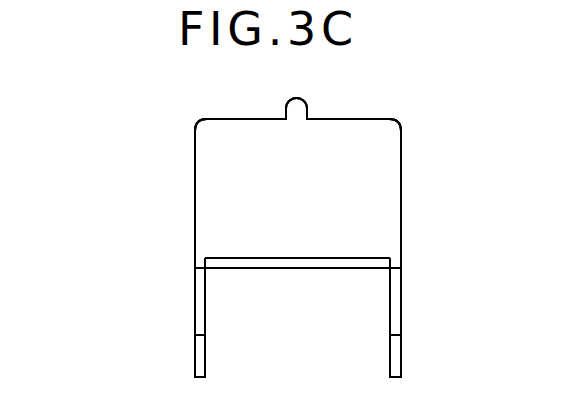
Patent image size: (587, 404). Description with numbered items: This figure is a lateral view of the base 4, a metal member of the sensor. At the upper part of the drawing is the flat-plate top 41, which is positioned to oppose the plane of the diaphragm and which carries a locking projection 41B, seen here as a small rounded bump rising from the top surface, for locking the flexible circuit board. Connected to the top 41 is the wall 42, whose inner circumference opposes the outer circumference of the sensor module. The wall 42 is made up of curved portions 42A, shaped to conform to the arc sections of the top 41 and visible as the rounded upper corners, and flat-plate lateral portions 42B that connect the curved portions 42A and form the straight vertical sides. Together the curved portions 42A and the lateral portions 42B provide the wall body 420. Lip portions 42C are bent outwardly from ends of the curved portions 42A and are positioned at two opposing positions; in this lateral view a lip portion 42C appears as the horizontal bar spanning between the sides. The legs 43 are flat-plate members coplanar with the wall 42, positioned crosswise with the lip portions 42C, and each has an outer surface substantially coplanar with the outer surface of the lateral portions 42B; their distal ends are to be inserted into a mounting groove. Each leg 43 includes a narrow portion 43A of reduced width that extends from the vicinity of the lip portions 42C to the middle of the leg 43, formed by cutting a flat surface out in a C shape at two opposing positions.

The base 4 is at (418, 135).
The top 41 is at (222, 118).
The locking projection 41B is at (297, 99).
The wall 42 is at (178, 162).
The curved portions 42A is at (378, 133).
The lateral portions 42B is at (195, 194).
The lip portions 42C is at (298, 258).
The wall body 420 is at (198, 127).
The legs 43 is at (184, 293).
The narrow portion 43A is at (197, 331).